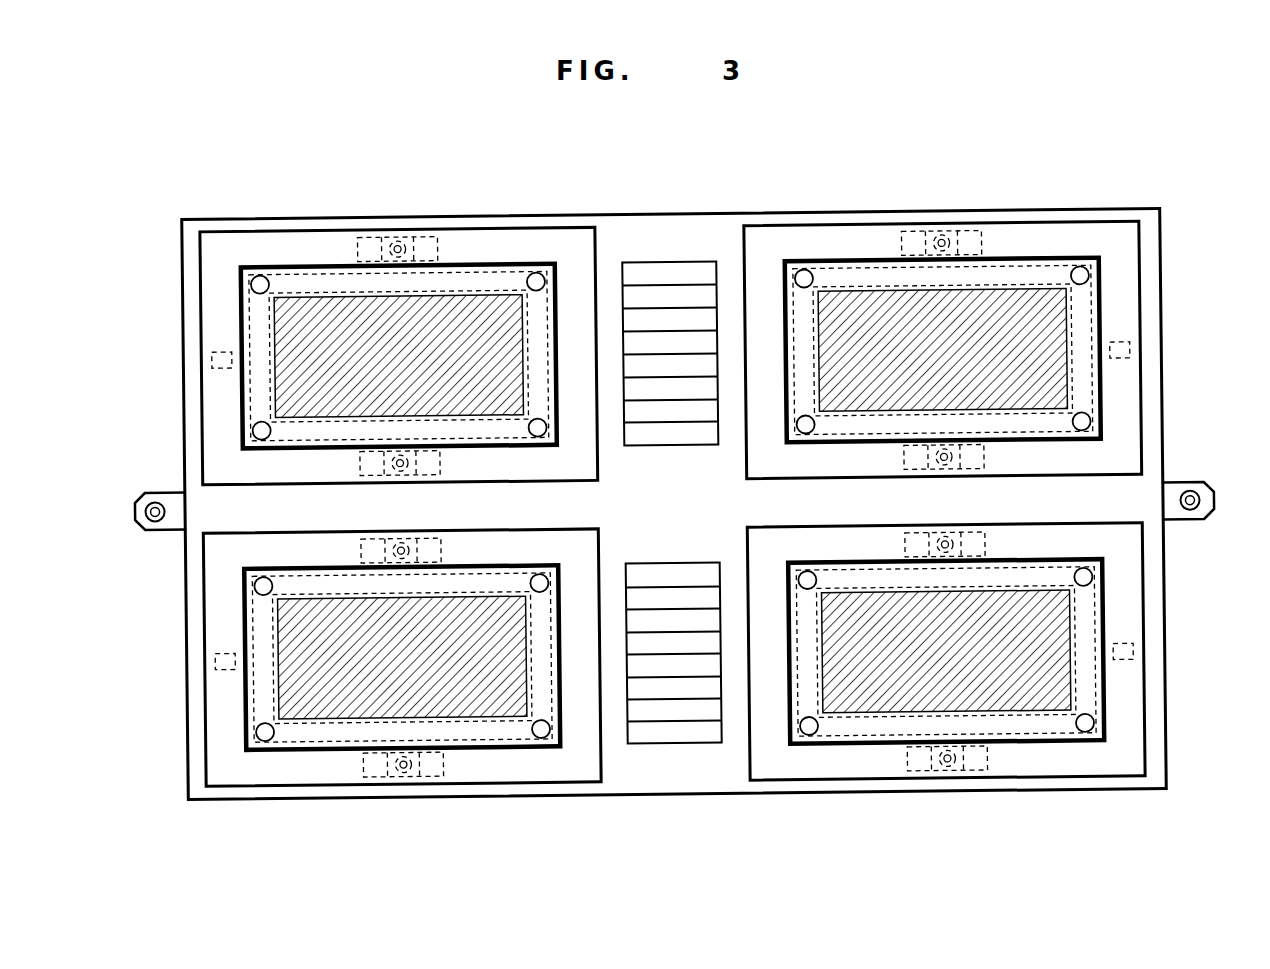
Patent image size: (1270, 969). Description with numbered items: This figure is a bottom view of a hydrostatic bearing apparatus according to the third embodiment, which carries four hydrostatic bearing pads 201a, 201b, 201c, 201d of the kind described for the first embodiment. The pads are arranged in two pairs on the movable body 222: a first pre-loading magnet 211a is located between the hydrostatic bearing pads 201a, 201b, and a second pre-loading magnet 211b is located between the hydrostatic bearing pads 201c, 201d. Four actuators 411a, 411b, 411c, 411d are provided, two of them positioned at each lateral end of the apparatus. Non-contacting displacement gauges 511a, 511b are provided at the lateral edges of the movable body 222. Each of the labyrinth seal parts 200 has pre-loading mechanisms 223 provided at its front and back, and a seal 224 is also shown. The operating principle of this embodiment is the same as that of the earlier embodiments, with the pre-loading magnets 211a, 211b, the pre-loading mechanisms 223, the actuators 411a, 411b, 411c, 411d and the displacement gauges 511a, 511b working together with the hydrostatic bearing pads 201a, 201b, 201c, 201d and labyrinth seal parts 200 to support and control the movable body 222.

The labyrinth seal part 200 is at (1048, 254).
The hydrostatic bearing pad 201a is at (842, 314).
The hydrostatic bearing pad 201b is at (389, 281).
The hydrostatic bearing pad 201c is at (336, 686).
The hydrostatic bearing pad 201d is at (846, 690).
The first pre-loading magnet 211a is at (699, 318).
The second pre-loading magnet 211b is at (698, 690).
The movable body 222 is at (620, 247).
The pre-loading mechanism 223 is at (405, 234).
The seal 224 is at (262, 271).
The actuator 411a is at (1132, 350).
The actuator 411b is at (213, 352).
The actuator 411c is at (213, 656).
The actuator 411d is at (1132, 662).
The non-contacting displacement gauge 511a is at (1197, 514).
The non-contacting displacement gauge 511b is at (152, 514).